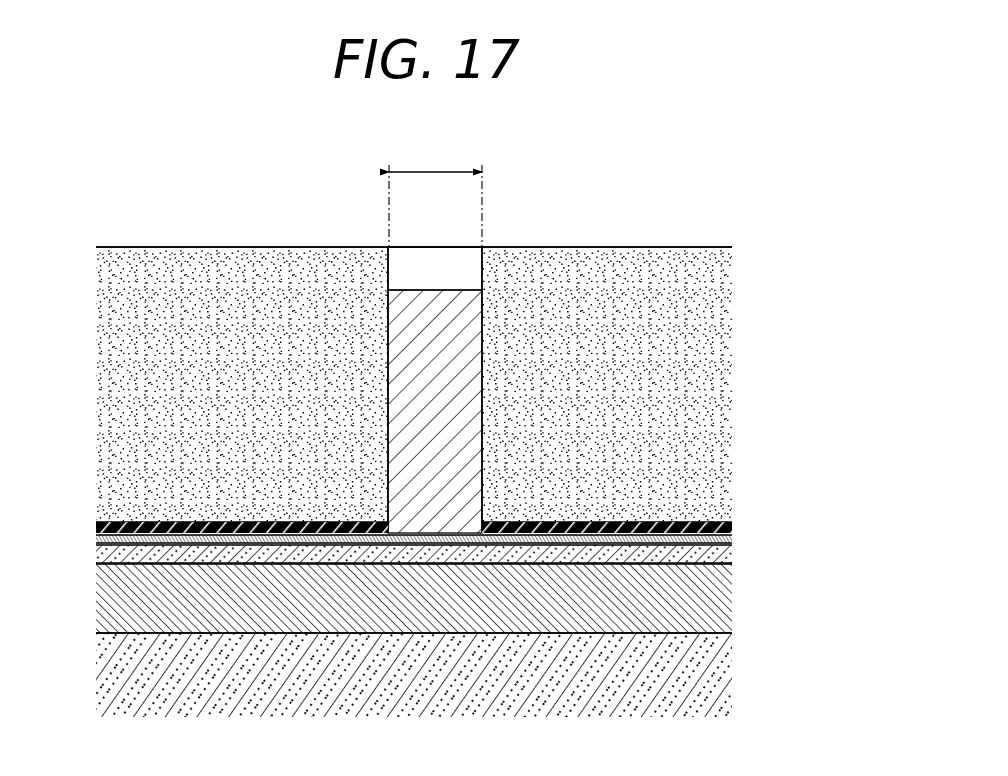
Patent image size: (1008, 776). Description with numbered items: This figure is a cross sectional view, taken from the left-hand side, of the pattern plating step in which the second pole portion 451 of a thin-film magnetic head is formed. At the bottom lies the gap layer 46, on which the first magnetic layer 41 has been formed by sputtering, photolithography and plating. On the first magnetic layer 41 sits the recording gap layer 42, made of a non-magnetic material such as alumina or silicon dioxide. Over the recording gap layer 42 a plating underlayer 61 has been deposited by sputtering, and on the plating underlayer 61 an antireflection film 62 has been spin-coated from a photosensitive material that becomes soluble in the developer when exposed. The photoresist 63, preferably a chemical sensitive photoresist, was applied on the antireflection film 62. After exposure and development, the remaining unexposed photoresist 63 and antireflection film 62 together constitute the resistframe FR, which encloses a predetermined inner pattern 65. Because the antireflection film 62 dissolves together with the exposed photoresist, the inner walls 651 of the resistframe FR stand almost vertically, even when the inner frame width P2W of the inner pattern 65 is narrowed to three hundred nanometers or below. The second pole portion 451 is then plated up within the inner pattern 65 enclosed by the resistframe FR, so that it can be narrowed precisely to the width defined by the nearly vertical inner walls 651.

The photoresist 63 is at (726, 412).
The antireflection film 62 is at (102, 527).
The plating underlayer 61 is at (732, 537).
The recording gap layer 42 is at (727, 552).
The first magnetic layer 41 is at (727, 602).
The gap layer 46 is at (727, 675).
The second pole portion 451 is at (402, 287).
The inner pattern 65 is at (447, 267).
The inner walls 651 is at (424, 300).
The inner frame width P2W is at (433, 170).
The resistframe FR is at (242, 240).